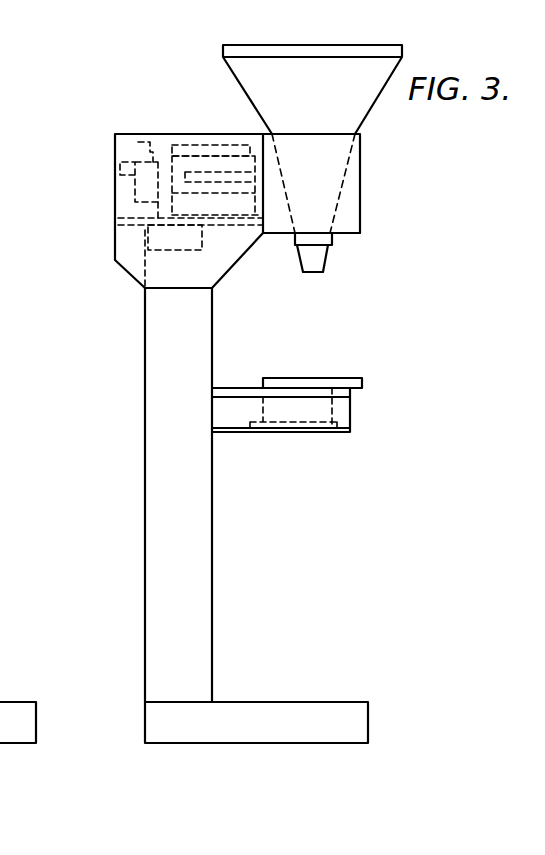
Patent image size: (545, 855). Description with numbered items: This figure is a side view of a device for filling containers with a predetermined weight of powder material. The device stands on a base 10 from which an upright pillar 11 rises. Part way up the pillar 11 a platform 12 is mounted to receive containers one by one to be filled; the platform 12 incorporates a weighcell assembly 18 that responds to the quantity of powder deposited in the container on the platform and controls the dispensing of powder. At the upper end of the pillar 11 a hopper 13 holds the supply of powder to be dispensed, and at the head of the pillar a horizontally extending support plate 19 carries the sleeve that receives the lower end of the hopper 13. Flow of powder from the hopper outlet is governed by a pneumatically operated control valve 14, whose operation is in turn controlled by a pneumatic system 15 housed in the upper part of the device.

The base 10 is at (307, 706).
The upright pillar 11 is at (151, 587).
The platform 12 is at (283, 380).
The hopper 13 is at (245, 80).
The pneumatically operated control valve 14 is at (315, 262).
The pneumatic system 15 is at (112, 163).
The weighcell assembly 18 is at (318, 416).
The support plate 19 is at (355, 234).